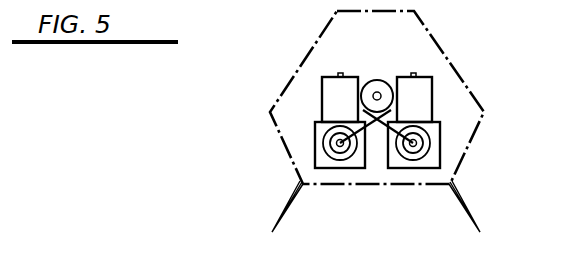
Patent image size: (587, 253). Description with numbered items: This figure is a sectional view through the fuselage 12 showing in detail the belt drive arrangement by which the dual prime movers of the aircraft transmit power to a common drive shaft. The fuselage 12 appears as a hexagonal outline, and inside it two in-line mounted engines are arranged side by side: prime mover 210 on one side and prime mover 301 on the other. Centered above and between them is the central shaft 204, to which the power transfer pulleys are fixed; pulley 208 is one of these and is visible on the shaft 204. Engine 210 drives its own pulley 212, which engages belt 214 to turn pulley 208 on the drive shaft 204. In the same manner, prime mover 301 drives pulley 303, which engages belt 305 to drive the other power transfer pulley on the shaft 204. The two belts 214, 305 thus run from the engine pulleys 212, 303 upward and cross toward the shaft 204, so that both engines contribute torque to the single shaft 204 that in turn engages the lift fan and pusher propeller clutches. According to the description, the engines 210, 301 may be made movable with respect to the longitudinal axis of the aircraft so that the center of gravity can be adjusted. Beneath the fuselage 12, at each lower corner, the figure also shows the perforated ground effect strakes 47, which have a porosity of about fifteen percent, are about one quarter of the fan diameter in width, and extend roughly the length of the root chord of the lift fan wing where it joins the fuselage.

The fuselage 12 is at (456, 61).
The perforated ground effect strakes 47 is at (286, 204).
The central shaft 204 is at (381, 91).
The power transfer pulley 208 is at (375, 79).
The prime mover 210 is at (314, 150).
The pulley 212 is at (336, 142).
The belt 214 is at (373, 137).
The prime mover 301 is at (442, 154).
The pulley 303 is at (418, 142).
The belt 305 is at (381, 137).